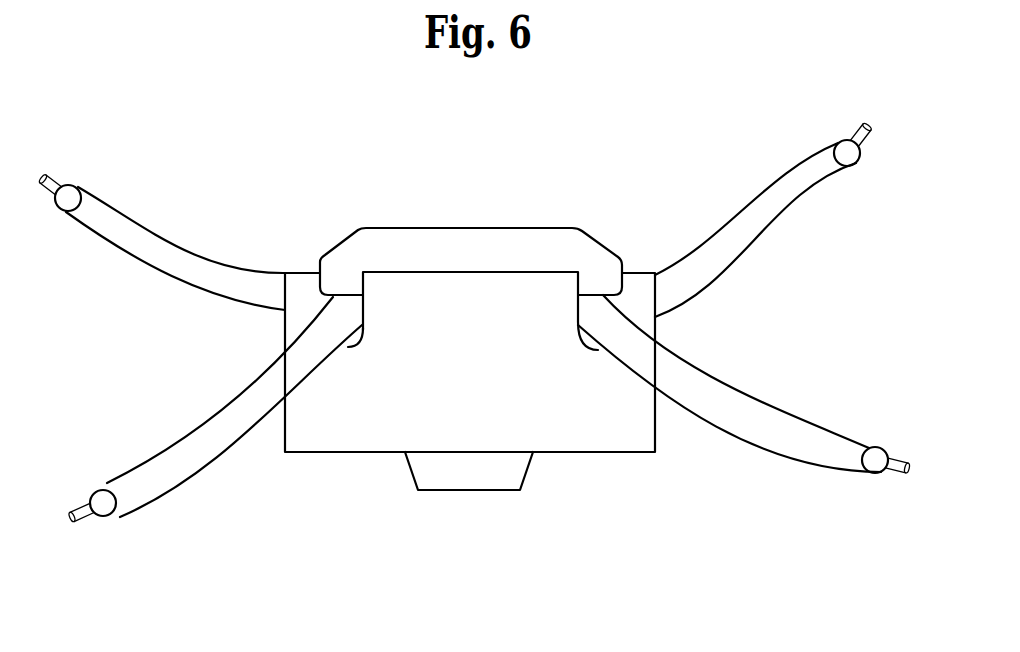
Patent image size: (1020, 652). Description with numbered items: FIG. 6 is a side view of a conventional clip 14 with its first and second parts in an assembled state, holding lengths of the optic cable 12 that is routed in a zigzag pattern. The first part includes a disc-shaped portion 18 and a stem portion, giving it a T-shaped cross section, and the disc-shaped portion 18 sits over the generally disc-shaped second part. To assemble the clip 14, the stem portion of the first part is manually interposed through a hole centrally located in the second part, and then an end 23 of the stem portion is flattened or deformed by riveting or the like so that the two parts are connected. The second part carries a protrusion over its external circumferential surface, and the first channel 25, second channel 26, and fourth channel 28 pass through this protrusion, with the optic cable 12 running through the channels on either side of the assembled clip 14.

The optic cable 12 is at (816, 210).
The clip 14 is at (295, 498).
The disc-shaped portion 18 is at (597, 239).
The end of the stem portion 23 is at (525, 474).
The first channel 25 is at (597, 348).
The second channel 26 is at (435, 272).
The fourth channel 28 is at (348, 348).